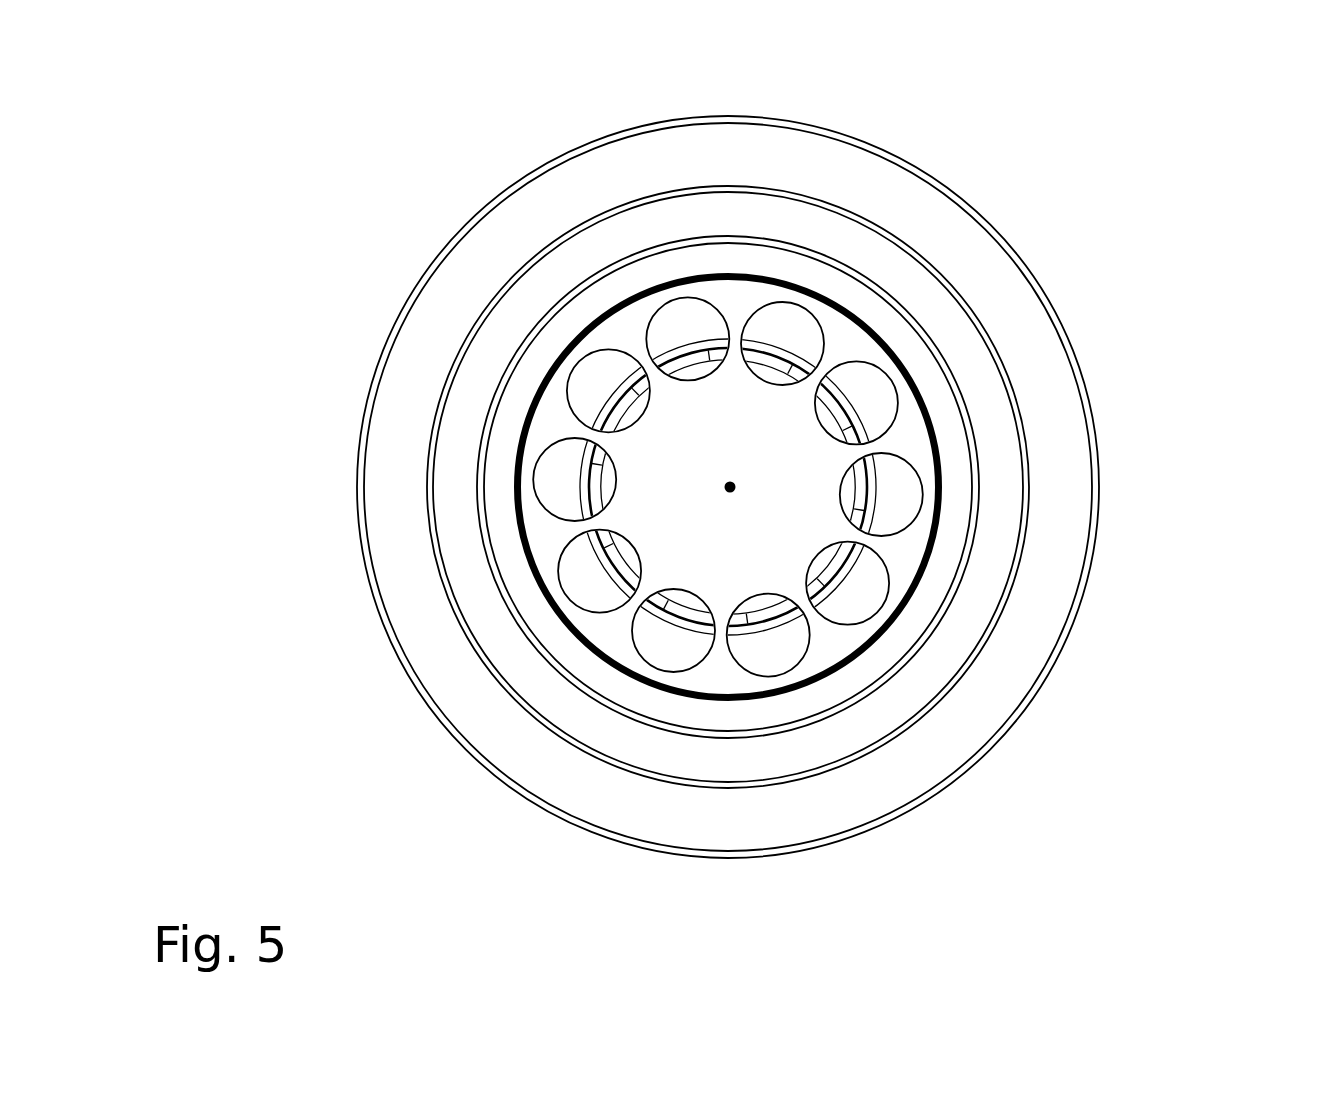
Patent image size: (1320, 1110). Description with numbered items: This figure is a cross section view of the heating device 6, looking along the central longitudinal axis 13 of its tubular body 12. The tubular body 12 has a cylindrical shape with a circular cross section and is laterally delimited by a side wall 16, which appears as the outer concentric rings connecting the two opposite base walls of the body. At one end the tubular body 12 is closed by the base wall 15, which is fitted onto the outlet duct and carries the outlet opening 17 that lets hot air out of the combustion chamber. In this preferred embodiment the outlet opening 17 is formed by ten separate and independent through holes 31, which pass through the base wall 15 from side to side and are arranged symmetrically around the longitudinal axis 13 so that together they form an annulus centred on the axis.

The heating device 6 is at (1196, 164).
The tubular body 12 is at (1202, 670).
The longitudinal axis 13 is at (730, 480).
The base wall 15 is at (768, 707).
The side wall 16 is at (358, 546).
The outlet opening 17 is at (607, 648).
The through holes 31 is at (780, 326).